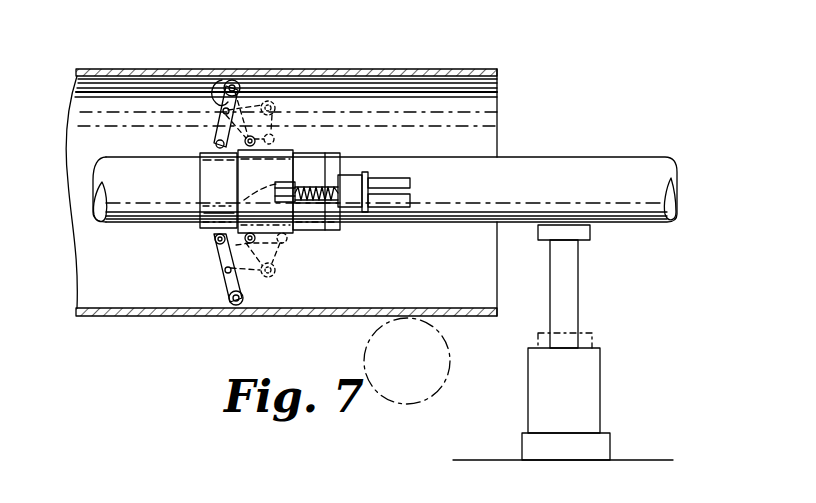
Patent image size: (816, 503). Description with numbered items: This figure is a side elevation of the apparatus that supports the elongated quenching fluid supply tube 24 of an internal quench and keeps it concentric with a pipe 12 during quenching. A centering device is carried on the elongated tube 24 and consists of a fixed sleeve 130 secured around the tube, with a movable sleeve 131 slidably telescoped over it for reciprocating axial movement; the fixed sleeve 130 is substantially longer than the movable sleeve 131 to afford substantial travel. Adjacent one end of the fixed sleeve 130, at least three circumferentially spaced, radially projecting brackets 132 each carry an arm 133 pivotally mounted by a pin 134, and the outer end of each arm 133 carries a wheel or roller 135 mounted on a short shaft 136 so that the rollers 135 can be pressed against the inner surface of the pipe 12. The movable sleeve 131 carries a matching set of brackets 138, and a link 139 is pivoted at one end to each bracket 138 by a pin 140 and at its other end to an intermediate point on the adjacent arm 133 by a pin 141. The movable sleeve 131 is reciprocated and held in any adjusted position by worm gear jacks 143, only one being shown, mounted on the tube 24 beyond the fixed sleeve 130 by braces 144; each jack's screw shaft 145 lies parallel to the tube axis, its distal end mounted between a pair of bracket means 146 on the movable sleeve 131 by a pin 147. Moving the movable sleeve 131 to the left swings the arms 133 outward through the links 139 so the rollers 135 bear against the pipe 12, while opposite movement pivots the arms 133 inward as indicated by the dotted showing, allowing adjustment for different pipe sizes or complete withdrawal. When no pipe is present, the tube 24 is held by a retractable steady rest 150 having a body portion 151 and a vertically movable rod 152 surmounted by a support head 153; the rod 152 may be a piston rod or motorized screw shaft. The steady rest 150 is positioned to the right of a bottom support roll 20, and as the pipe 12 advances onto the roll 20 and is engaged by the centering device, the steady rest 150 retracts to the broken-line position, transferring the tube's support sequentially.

The pipe 12 is at (445, 69).
The support roll 20 is at (379, 402).
The elongated tube 24 is at (451, 167).
The fixed sleeve 130 is at (215, 176).
The movable sleeve 131 is at (243, 184).
The bracket 132 is at (215, 140).
The arm 133 is at (228, 76).
The pin 134 is at (222, 252).
The roller 135 is at (225, 294).
The short shaft 136 is at (240, 306).
The bracket 138 is at (278, 133).
The link 139 is at (262, 104).
The pin 140 is at (243, 150).
The pin 141 is at (217, 118).
The worm gear jack 143 is at (356, 175).
The brace 144 is at (388, 208).
The screw shaft 145 is at (315, 196).
The bracket means 146 is at (300, 212).
The pin 147 is at (284, 192).
The steady rest 150 is at (600, 392).
The body portion 151 is at (543, 409).
The rod 152 is at (566, 293).
The support head 153 is at (588, 230).